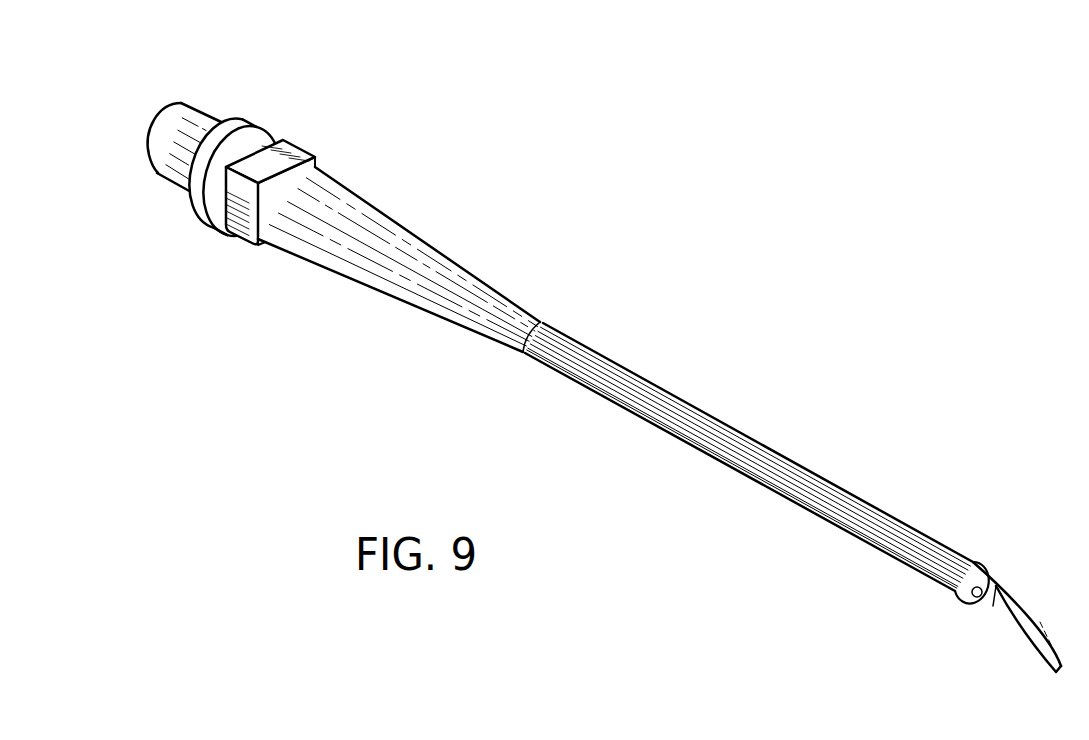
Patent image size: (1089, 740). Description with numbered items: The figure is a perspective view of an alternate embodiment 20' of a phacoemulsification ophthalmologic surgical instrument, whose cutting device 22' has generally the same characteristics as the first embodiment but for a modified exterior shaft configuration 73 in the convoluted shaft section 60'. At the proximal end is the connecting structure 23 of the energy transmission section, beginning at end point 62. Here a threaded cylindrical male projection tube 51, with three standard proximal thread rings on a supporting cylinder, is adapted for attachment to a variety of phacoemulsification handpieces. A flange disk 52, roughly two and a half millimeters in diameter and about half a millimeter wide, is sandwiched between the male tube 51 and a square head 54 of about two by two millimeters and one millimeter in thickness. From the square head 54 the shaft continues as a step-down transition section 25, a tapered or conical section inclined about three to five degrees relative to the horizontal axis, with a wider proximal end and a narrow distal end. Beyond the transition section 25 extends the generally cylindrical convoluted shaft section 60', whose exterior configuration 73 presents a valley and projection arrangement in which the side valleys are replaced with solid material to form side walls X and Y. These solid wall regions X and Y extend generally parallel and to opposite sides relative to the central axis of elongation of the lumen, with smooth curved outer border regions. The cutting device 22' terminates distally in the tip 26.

The alternate embodiment of phacoemulsification ophthalmologic surgical instrument 20' is at (555, 364).
The cutting device 22' is at (399, 258).
The connecting structure 23 is at (220, 110).
The transition section 25 is at (282, 248).
The tip 26 is at (1004, 622).
The threaded cylindrical male projection tube 51 is at (168, 181).
The flange disk 52 is at (273, 120).
The square head 54 is at (297, 147).
The convoluted shaft section 60' is at (749, 457).
The end point of energy transmission section 62 is at (146, 159).
The modified exterior shaft configuration 73 is at (636, 381).
The side wall X is at (802, 499).
The side wall Y is at (885, 513).